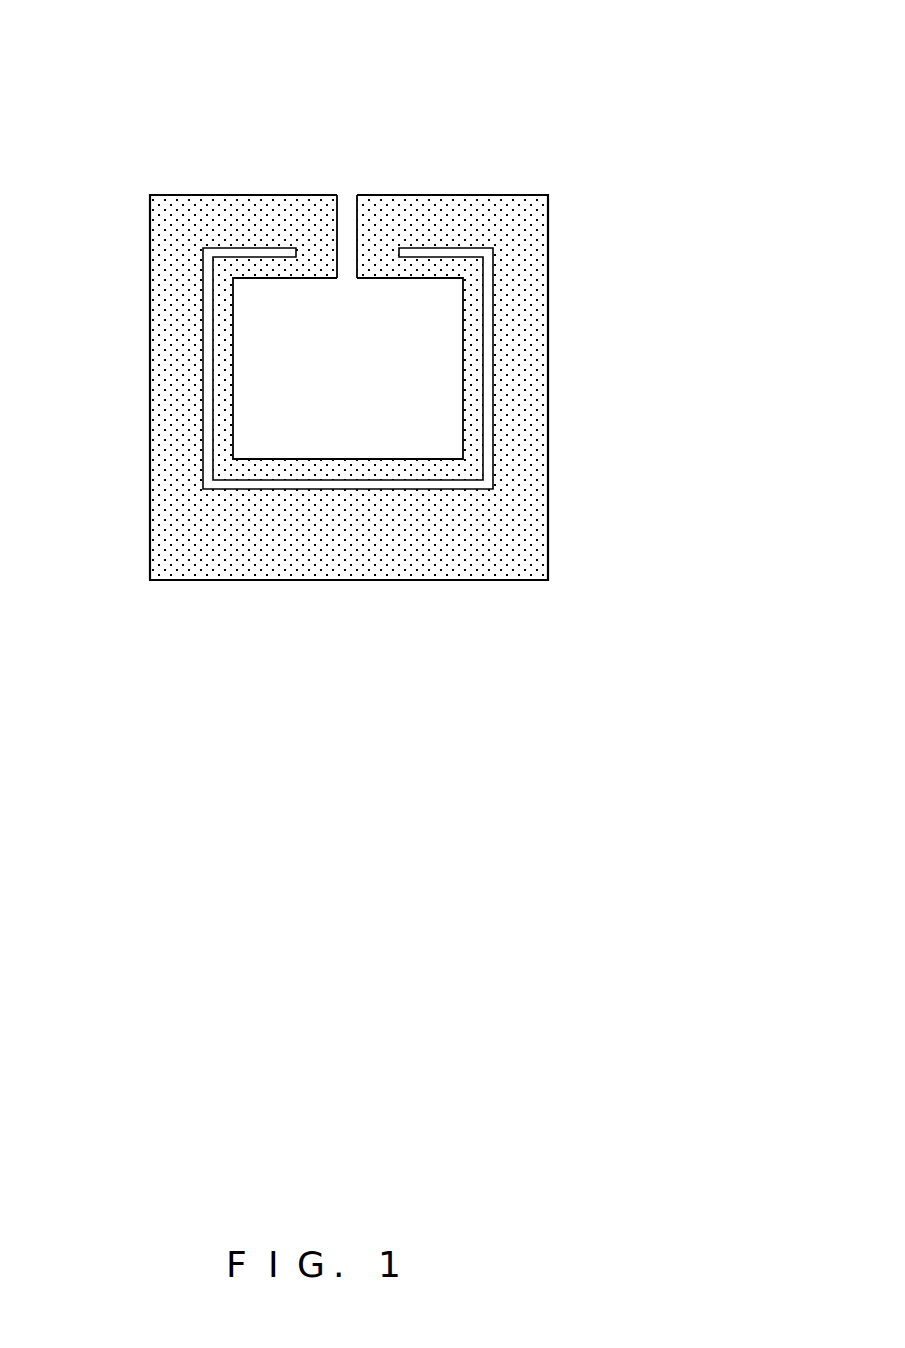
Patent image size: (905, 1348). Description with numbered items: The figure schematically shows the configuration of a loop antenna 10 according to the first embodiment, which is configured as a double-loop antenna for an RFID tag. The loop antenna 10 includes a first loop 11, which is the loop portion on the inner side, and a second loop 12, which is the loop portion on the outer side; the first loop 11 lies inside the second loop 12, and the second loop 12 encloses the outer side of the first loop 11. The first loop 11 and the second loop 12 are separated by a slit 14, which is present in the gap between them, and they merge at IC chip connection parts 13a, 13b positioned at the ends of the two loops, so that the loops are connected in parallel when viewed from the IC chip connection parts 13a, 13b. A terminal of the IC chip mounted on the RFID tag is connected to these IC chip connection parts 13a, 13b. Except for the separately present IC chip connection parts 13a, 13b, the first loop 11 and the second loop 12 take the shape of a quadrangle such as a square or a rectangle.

The loop antenna 10 is at (465, 47).
The first loop 11 is at (450, 472).
The second loop 12 is at (165, 508).
The IC chip connection part 13a is at (356, 230).
The IC chip connection part 13b is at (337, 228).
The slit 14 is at (207, 408).